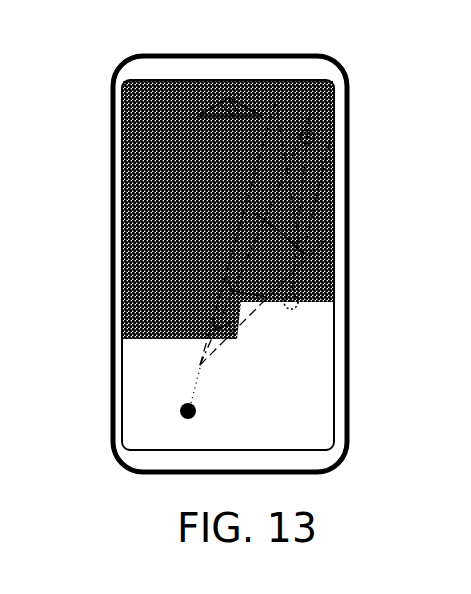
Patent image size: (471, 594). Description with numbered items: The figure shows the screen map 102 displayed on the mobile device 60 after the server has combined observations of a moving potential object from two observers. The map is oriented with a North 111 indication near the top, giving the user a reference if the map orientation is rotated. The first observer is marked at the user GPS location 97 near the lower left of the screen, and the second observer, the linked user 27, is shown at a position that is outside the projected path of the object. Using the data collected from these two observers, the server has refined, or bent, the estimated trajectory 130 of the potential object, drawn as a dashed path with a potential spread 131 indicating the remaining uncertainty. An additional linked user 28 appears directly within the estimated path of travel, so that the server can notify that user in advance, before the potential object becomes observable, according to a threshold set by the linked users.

The mobile device 60 is at (333, 60).
The screen map 102 is at (114, 146).
The North indication 111 is at (217, 105).
The linked user 28 is at (314, 137).
The linked user (second observer) 27 is at (299, 308).
The trajectory 130 is at (262, 266).
The potential spread 131 is at (318, 245).
The user GPS location 97 is at (181, 408).